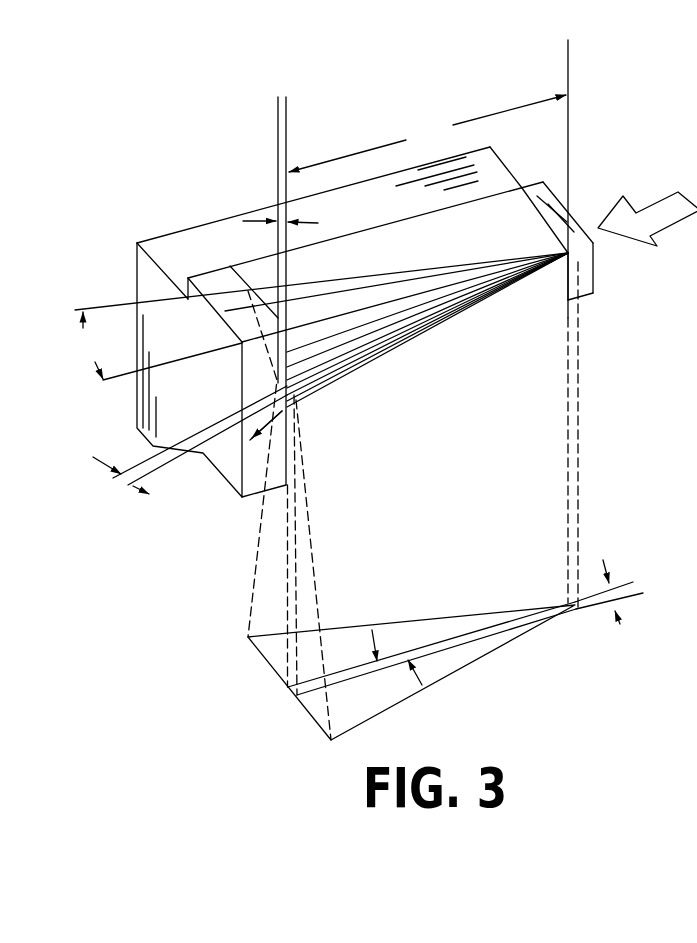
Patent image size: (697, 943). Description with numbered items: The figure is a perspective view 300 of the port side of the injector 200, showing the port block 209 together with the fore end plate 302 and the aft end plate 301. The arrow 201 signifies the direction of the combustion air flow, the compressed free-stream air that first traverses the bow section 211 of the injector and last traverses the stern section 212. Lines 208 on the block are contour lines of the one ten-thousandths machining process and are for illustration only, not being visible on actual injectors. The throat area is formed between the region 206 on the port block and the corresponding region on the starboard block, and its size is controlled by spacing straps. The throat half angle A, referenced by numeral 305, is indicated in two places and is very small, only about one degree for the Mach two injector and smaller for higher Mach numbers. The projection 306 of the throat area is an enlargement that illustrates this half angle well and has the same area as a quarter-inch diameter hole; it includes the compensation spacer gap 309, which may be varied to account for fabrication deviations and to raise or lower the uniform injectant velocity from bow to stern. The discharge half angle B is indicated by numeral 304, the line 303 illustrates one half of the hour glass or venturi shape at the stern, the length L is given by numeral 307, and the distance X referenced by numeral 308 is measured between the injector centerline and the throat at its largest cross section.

The injector 200 is at (632, 323).
The arrow signifying direction of combustion air flow 201 is at (630, 218).
The throat area reference on port block 206 is at (280, 385).
The contour lines 208 is at (363, 312).
The port block 209 is at (353, 210).
The bow section 211 is at (555, 272).
The stern section 212 is at (263, 272).
The perspective view 300 is at (236, 147).
The aft end plate 301 is at (173, 252).
The fore end plate 302 is at (580, 275).
The hour glass shape line 303 is at (187, 298).
The discharge half angle B 304 is at (80, 338).
The throat half angle A 305 is at (92, 462).
The throat area projection 306 is at (457, 665).
The length L 307 is at (433, 127).
The distance X 308 is at (318, 223).
The compensation spacer gap 309 is at (622, 622).